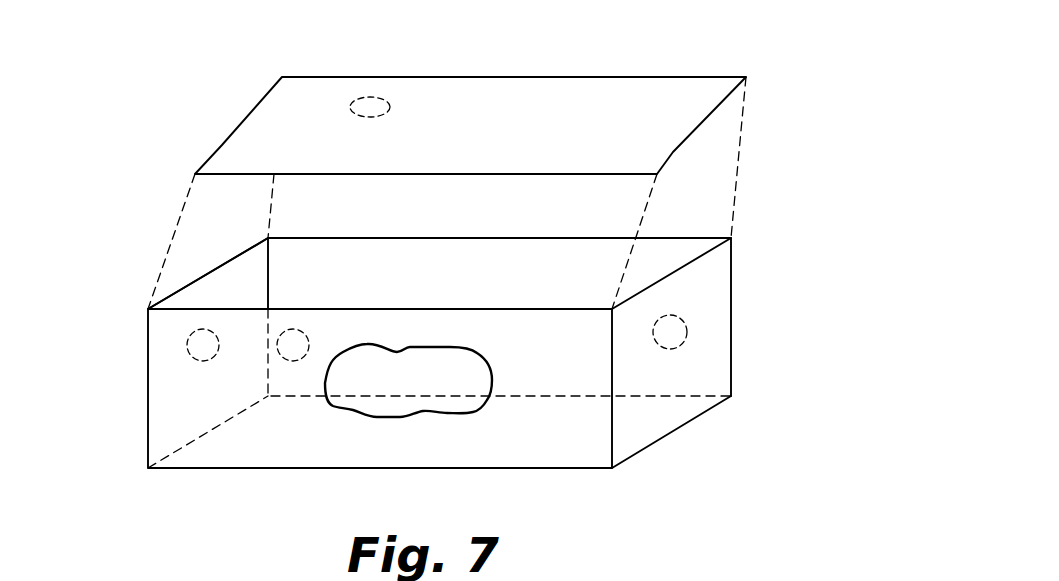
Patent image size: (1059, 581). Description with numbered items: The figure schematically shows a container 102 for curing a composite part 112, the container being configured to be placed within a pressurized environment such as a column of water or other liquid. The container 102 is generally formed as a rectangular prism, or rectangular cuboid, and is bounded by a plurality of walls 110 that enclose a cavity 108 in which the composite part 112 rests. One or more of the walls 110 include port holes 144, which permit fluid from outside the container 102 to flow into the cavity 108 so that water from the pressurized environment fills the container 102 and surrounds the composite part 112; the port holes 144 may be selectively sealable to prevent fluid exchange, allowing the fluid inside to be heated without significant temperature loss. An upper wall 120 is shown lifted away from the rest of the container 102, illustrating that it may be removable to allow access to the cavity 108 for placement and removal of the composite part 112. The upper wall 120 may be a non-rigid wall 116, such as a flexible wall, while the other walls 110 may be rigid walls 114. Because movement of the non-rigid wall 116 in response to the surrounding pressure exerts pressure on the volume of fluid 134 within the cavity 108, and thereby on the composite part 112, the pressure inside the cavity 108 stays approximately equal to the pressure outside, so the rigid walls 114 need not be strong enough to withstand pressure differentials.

The container 102 is at (118, 433).
The cavity 108 is at (235, 300).
The walls 110 is at (298, 95).
The composite part 112 is at (458, 412).
The rigid walls 114 is at (589, 280).
The non-rigid wall 116 is at (690, 93).
The upper wall 120 is at (527, 80).
The volume of fluid 134 is at (497, 334).
The port holes 144 is at (373, 98).